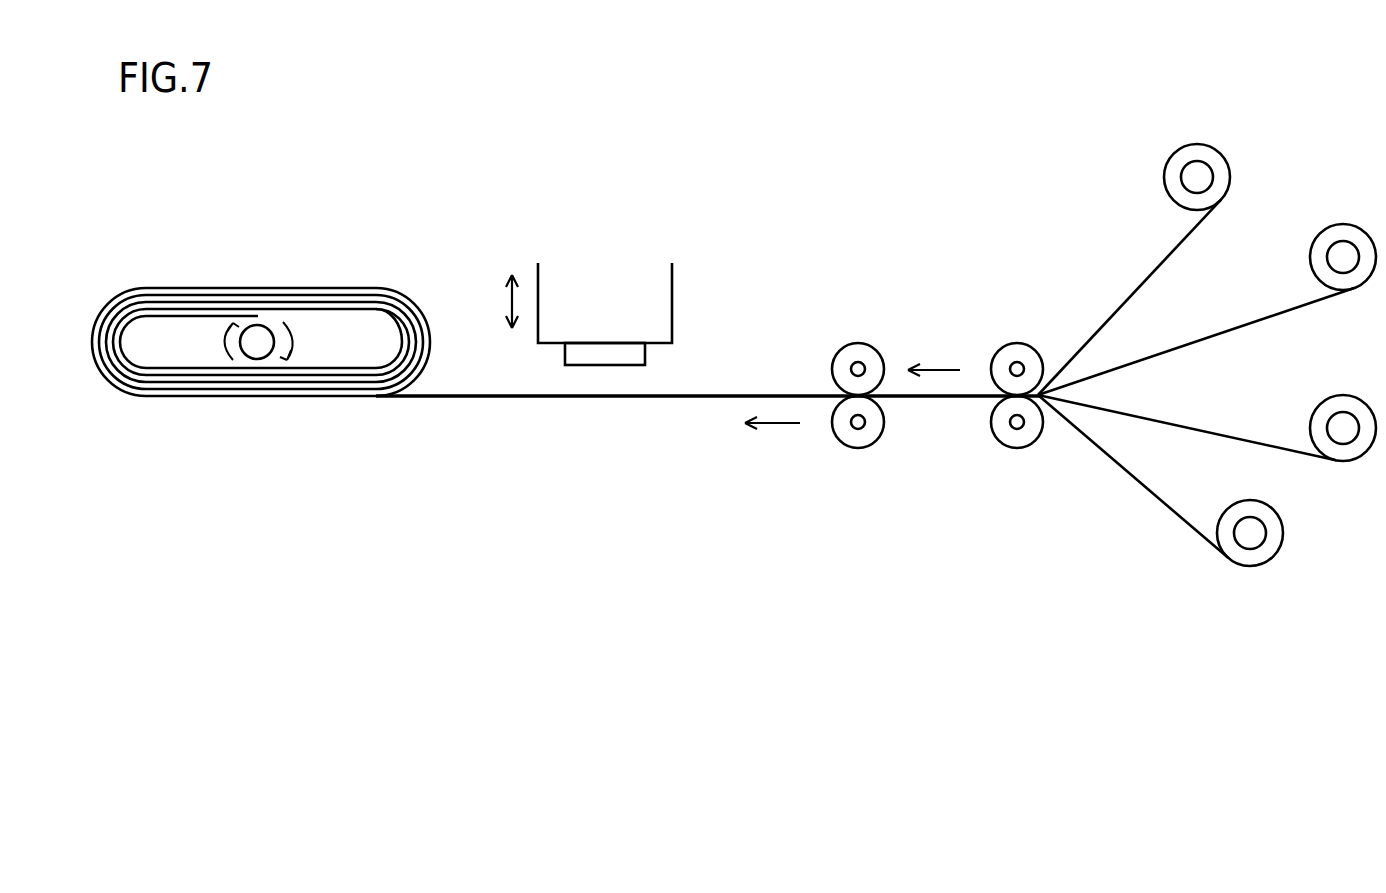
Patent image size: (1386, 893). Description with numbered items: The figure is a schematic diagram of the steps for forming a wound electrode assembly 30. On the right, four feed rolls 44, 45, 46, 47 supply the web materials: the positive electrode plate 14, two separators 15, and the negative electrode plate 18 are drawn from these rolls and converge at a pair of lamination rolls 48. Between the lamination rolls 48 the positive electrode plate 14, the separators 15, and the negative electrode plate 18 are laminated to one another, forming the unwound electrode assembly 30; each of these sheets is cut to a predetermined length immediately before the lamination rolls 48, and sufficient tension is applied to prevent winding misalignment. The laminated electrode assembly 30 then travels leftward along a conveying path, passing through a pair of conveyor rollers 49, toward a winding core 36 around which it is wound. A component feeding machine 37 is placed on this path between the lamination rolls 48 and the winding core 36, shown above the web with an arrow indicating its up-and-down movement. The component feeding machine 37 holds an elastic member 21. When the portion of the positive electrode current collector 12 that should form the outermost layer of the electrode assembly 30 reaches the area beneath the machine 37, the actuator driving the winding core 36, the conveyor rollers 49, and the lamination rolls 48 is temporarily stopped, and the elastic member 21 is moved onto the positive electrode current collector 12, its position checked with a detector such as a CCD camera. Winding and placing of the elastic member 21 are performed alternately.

The winding core 36 is at (183, 358).
The component feeding machine 37 is at (640, 287).
The elastic member 21 is at (623, 357).
The electrode assembly 30 is at (936, 397).
The positive electrode current collector 12 is at (708, 463).
The conveyor rollers 49 is at (855, 352).
The lamination rolls 48 is at (1015, 352).
The separator 15 is at (1130, 288).
The negative electrode plate 18 is at (1212, 335).
The positive electrode plate 14 is at (1162, 501).
The feed roll 44 is at (1196, 152).
The feed roll 45 is at (1342, 232).
The feed roll 46 is at (1343, 405).
The feed roll 47 is at (1275, 527).